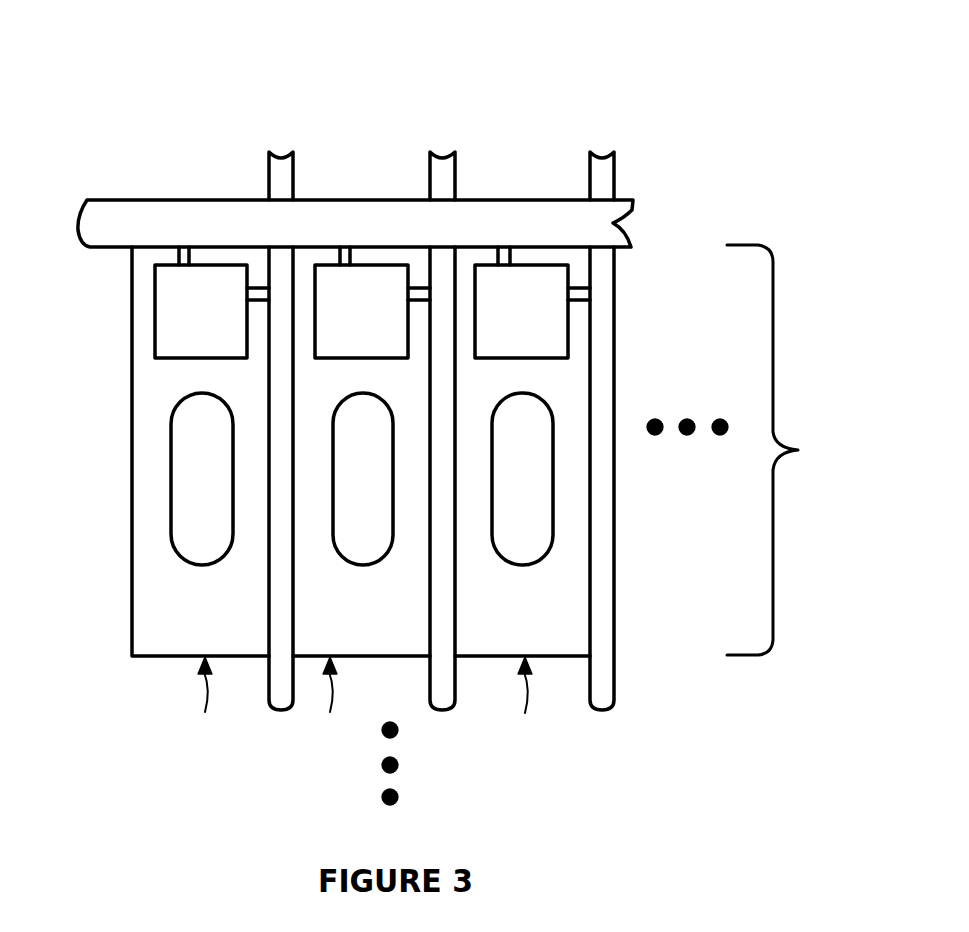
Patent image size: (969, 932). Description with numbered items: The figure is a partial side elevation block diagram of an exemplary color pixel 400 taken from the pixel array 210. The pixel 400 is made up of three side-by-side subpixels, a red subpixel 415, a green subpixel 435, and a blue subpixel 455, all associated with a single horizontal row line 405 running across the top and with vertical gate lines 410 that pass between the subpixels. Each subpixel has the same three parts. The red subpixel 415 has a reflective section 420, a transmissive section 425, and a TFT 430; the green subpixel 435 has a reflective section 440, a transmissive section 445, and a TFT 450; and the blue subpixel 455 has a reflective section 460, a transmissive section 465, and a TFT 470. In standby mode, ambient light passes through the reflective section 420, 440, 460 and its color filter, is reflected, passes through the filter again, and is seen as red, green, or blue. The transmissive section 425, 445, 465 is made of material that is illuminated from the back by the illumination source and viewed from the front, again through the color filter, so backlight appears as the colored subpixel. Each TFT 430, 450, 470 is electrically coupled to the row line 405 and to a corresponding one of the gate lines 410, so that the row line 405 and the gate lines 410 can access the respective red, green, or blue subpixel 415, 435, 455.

The pixel array 210 is at (284, 39).
The pixel 400 is at (624, 525).
The row line 405 is at (613, 223).
The gate lines 410 is at (590, 167).
The red subpixel 415 is at (200, 704).
The reflective section 420 is at (167, 577).
The transmissive section 425 is at (202, 520).
The TFT 430 is at (228, 327).
The green subpixel 435 is at (327, 704).
The reflective section 440 is at (383, 633).
The transmissive section 445 is at (360, 403).
The TFT 450 is at (335, 327).
The blue subpixel 455 is at (520, 704).
The reflective section 460 is at (567, 577).
The transmissive section 465 is at (532, 518).
The TFT 470 is at (494, 327).